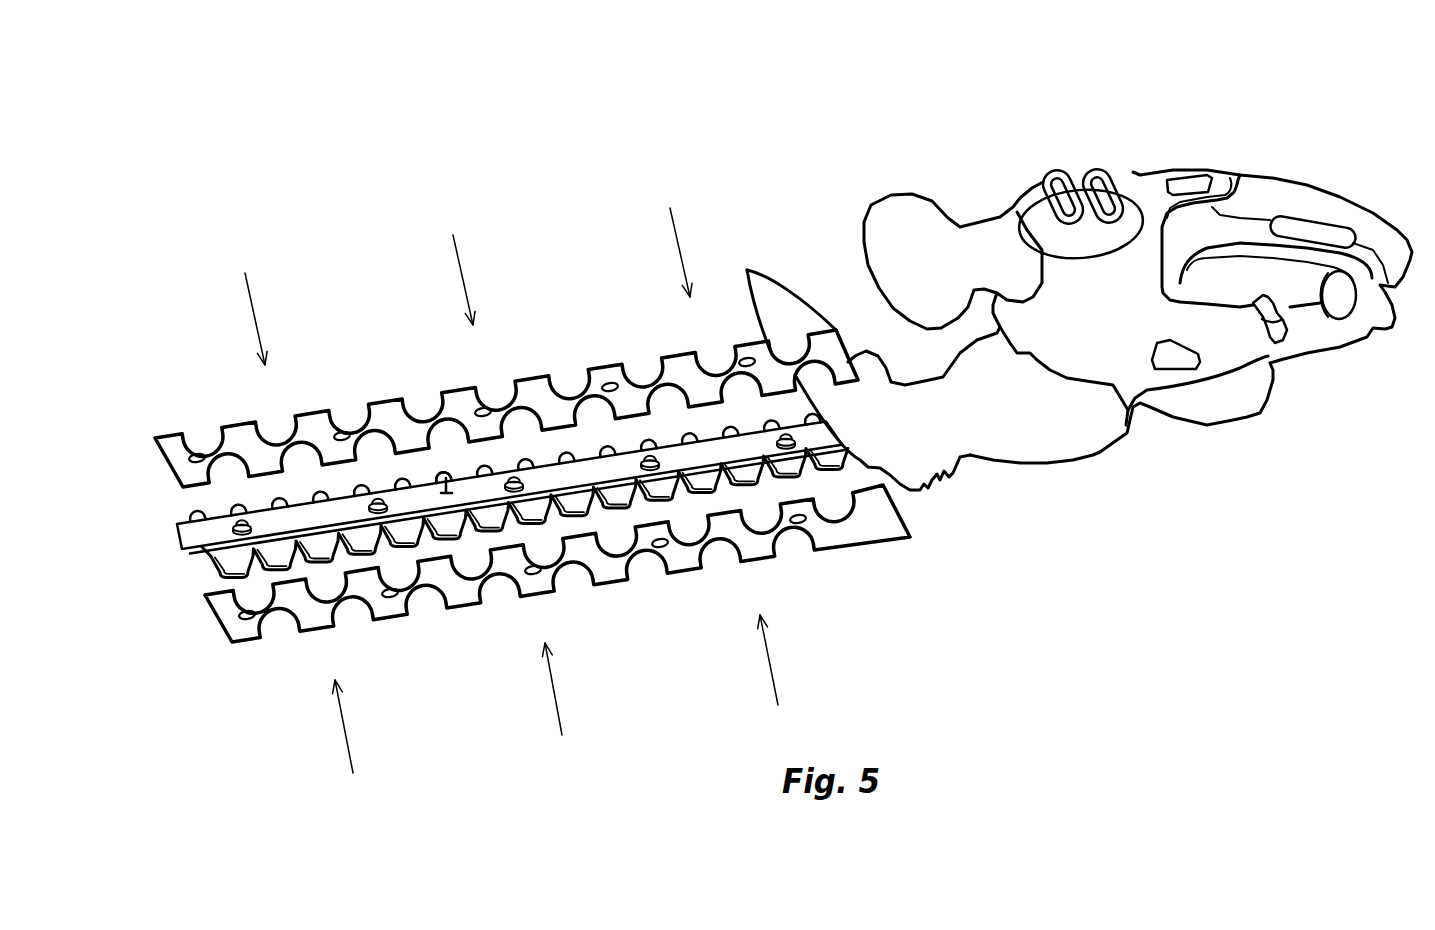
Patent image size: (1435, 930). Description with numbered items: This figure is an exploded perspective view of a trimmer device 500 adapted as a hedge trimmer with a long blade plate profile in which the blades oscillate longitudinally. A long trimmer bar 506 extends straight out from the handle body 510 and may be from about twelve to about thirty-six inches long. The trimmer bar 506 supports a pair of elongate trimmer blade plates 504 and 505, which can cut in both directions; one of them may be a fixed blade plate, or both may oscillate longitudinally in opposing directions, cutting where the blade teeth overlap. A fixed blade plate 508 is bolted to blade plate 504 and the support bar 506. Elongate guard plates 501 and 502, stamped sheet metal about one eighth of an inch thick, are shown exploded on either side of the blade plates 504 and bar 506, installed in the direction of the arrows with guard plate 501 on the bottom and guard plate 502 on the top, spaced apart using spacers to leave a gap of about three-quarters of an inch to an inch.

The trimmer device 500 is at (537, 176).
The guard plate 501 is at (533, 597).
The guard plate 502 is at (518, 380).
The trimmer blade plate 504 is at (203, 573).
The trimmer blade plate 505 is at (275, 508).
The trimmer bar 506 is at (446, 470).
The fixed blade plate 508 is at (769, 280).
The handle body 510 is at (1296, 180).